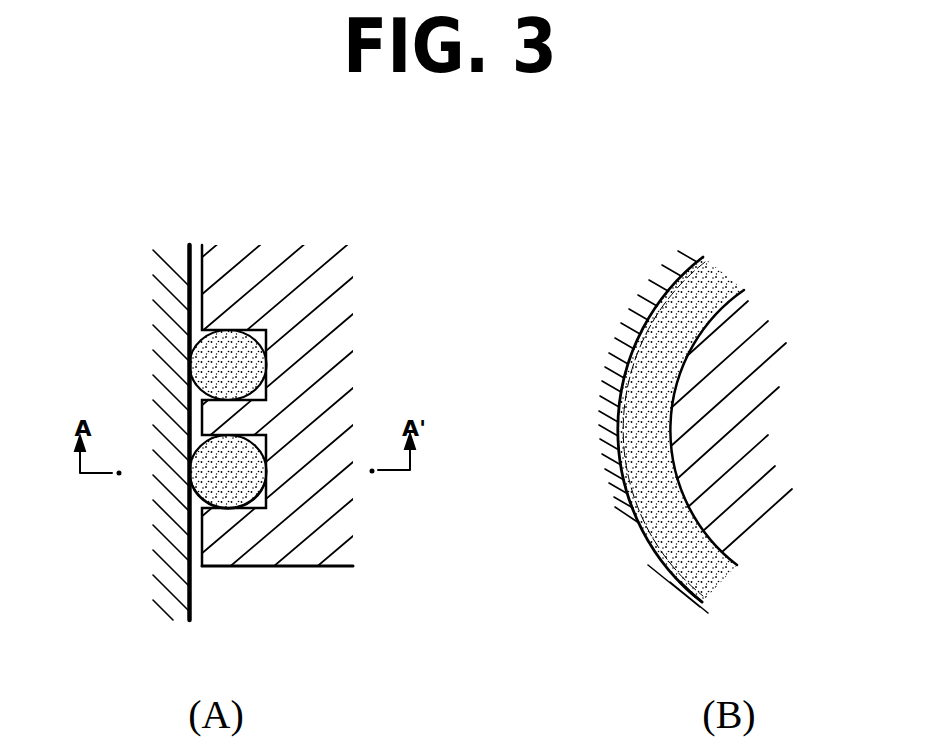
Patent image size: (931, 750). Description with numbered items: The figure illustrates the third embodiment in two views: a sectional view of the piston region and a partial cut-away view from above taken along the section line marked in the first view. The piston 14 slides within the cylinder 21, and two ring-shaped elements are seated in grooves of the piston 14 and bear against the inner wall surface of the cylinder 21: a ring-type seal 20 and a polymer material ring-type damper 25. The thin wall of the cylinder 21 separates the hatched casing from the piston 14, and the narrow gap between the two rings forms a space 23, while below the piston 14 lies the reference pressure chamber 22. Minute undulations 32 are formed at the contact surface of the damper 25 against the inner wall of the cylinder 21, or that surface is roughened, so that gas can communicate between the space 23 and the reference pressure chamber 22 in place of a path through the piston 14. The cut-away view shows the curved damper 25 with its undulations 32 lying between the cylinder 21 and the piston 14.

The piston 14 is at (262, 285).
The ring-type seal 20 is at (207, 360).
The cylinder 21 is at (182, 278).
The reference pressure chamber 22 is at (262, 587).
The space 23 is at (192, 422).
The damper 25 is at (228, 490).
The minute undulations 32 is at (228, 470).